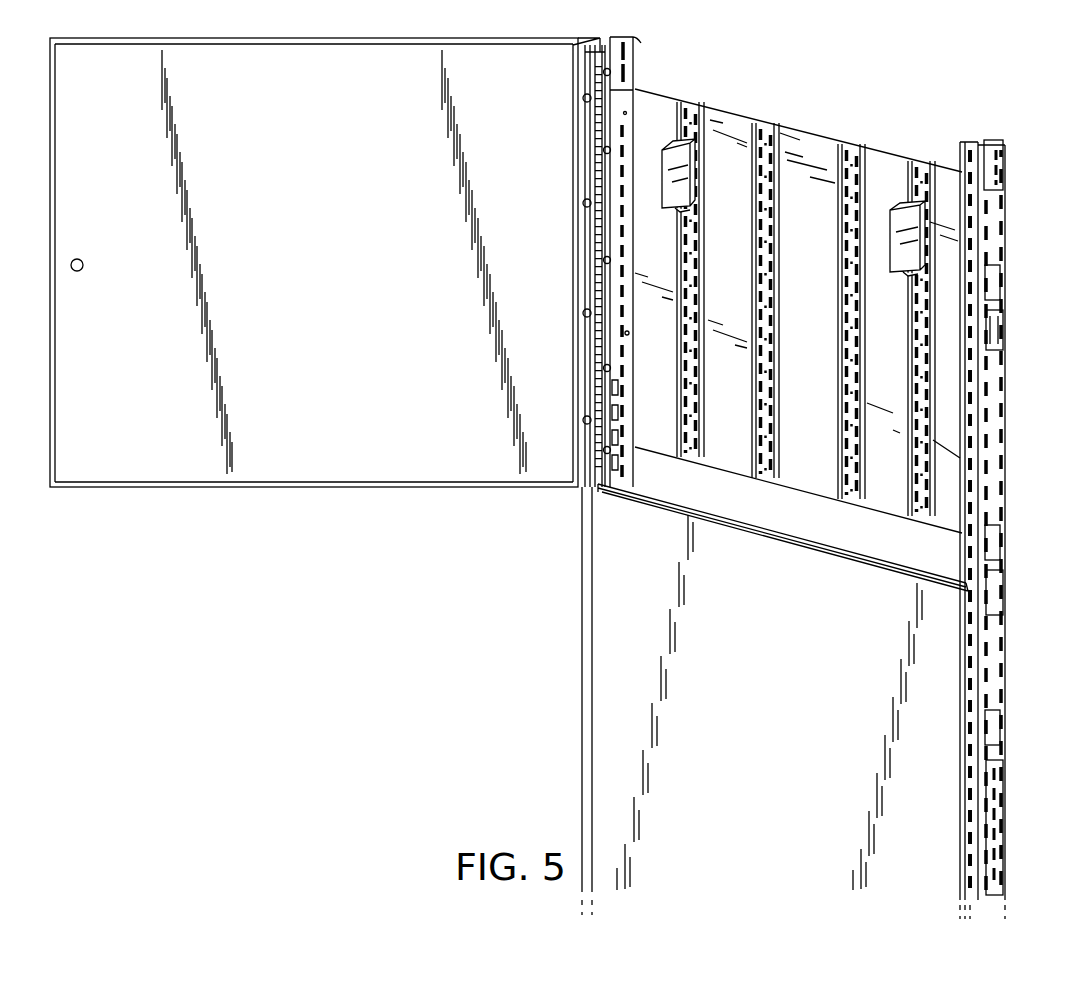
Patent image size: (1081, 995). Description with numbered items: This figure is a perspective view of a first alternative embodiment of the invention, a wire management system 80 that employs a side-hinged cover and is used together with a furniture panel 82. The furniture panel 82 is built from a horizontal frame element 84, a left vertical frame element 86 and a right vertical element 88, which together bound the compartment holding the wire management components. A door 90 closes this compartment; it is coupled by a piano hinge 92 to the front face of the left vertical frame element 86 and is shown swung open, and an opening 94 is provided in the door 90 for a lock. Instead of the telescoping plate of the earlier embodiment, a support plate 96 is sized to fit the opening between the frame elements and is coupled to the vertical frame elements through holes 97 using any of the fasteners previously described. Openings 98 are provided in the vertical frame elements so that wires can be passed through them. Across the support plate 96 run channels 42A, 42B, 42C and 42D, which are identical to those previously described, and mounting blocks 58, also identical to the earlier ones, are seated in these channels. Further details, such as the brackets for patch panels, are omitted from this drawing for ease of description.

The wire management system 80 is at (524, 618).
The furniture panel 82 is at (578, 688).
The horizontal frame element 84 is at (804, 518).
The left vertical frame element 86 is at (636, 42).
The right vertical element 88 is at (1005, 178).
The door 90 is at (372, 268).
The piano hinge 92 is at (592, 82).
The opening 94 is at (83, 262).
The support plate 96 is at (827, 312).
The holes 97 is at (629, 334).
The openings 98 is at (624, 228).
The channel 42A is at (708, 455).
The channel 42B is at (782, 140).
The channel 42C is at (867, 165).
The channel 42D is at (905, 500).
The mounting blocks 58 is at (663, 183).